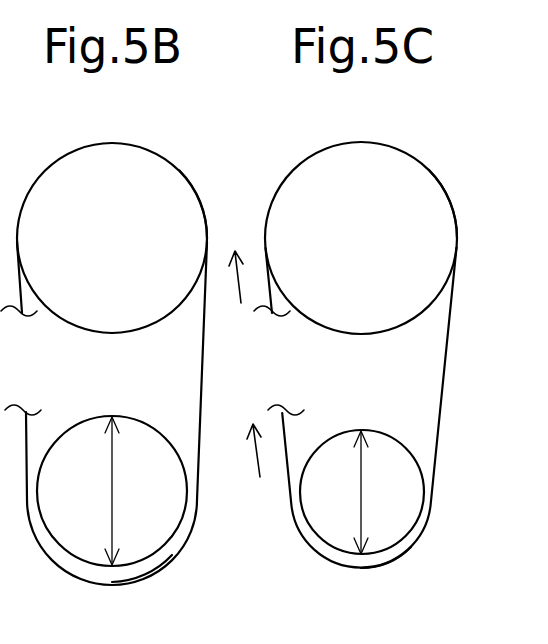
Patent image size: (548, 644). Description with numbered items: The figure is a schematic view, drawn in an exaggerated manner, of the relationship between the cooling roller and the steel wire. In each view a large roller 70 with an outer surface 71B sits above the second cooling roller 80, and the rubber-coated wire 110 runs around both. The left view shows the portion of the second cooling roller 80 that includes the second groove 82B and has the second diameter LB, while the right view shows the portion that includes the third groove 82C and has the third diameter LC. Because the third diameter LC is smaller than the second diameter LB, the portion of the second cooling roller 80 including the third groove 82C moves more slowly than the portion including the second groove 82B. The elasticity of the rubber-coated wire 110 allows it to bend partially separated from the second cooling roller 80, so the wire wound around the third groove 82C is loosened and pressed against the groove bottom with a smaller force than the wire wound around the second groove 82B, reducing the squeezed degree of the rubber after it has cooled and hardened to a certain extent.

In FIG. 5B, the roller (large drive roller) 70 is at (148, 144).
In FIG. 5C, the roller (large drive roller) 70 is at (398, 144).
In FIG. 5B, the outer peripheral surface of roller 70 71B is at (193, 185).
In FIG. 5C, the outer peripheral surface of roller 70 71B is at (444, 185).
In FIG. 5B, the second cooling roller 80 is at (137, 415).
In FIG. 5C, the second cooling roller 80 is at (381, 430).
In FIG. 5B, the rubber-coated wire 110 is at (201, 367).
In FIG. 5C, the rubber-coated wire 110 is at (444, 369).
In FIG. 5B, the second groove 82B is at (160, 554).
In FIG. 5C, the third groove 82C is at (402, 549).
In FIG. 5B, the second diameter LB is at (115, 517).
In FIG. 5C, the third diameter LC is at (364, 517).